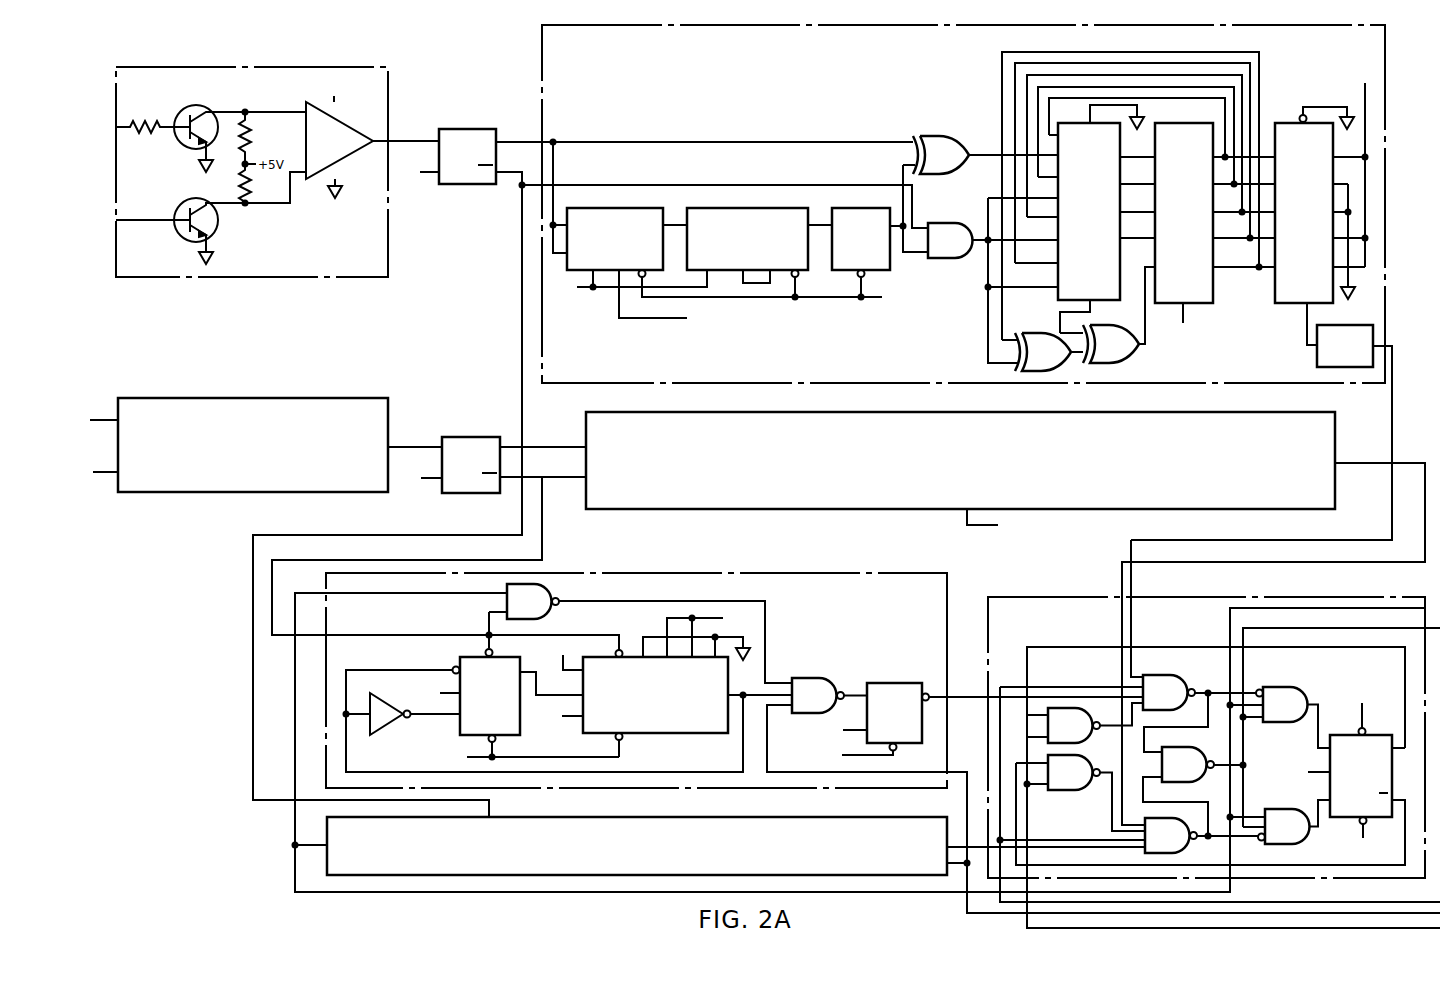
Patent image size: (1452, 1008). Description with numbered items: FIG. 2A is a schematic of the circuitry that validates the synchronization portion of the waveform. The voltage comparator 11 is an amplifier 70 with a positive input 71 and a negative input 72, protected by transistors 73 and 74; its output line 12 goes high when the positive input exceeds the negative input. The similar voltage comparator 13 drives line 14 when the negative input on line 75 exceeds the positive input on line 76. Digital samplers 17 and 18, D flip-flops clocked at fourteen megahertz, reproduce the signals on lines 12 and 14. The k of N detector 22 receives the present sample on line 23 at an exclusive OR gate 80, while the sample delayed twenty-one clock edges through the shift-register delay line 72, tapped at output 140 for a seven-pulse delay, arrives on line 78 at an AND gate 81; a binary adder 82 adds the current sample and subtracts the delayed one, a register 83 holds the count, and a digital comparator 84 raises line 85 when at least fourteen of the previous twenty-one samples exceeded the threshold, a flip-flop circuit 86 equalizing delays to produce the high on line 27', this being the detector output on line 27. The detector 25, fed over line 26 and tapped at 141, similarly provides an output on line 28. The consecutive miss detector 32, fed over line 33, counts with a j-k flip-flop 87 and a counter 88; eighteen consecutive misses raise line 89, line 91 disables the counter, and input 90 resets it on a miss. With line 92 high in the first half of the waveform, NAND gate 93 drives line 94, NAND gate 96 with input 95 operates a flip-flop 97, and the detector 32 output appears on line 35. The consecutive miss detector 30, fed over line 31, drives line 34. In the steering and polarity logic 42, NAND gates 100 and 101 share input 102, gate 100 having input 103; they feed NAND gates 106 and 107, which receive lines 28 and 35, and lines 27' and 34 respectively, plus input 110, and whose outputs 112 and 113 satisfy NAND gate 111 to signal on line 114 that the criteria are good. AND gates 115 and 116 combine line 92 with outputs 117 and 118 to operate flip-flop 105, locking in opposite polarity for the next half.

The voltage comparator 11 is at (279, 67).
The output line 12 is at (418, 133).
The voltage comparator 13 is at (270, 398).
The output line 14 is at (429, 445).
The digital sampler 17 is at (456, 129).
The digital sampler 18 is at (465, 437).
The k of N detector 22 is at (586, 383).
The line 23 is at (531, 137).
The k of N detector 25 is at (647, 412).
The line 26 is at (548, 447).
The line 27 is at (1151, 608).
The line 27' is at (1261, 443).
The line 28 is at (1425, 545).
The consecutive miss detector 30 is at (730, 817).
The line 31 is at (521, 222).
The consecutive miss detector 32 is at (822, 573).
The line 33 is at (542, 538).
The line 34 is at (980, 844).
The line 35 is at (962, 695).
The steering and polarity logic 42 is at (1032, 596).
The amplifier 70 is at (350, 122).
The positive input 71 is at (145, 118).
The negative input 72 is at (118, 218).
The transistor 73 is at (190, 110).
The transistor 74 is at (186, 206).
The line 75 is at (103, 423).
The line 76 is at (97, 470).
The line 78 is at (907, 254).
The exclusive OR gate 80 is at (948, 172).
The AND gate 81 is at (943, 224).
The binary adder 82 is at (1085, 118).
The register 83 is at (1189, 123).
The digital comparator 84 is at (1298, 118).
The line 85 is at (1306, 322).
The flip-flop circuit 86 is at (1317, 360).
The j-k flip-flop 87 is at (456, 657).
The counter 88 is at (667, 738).
The line 89 is at (756, 692).
The input 90 is at (598, 637).
The line 91 is at (727, 766).
The line 92 is at (295, 690).
The NAND gate 93 is at (548, 616).
The line 94 is at (768, 615).
The input 95 is at (767, 748).
The NAND gate 96 is at (815, 682).
The flip-flop 97 is at (893, 683).
The NAND gate 100 is at (1089, 719).
The NAND gate 101 is at (1079, 760).
The line 102 is at (1322, 928).
The input 103 is at (1027, 658).
The flip-flop circuit 105 is at (1368, 732).
The NAND gate 106 is at (1170, 676).
The NAND gate 107 is at (1196, 845).
The input 110 is at (1404, 902).
The NAND gate 111 is at (1193, 744).
The input 112 is at (1172, 731).
The input 113 is at (1143, 790).
The line 114 is at (1307, 627).
The AND gate 115 is at (1293, 688).
The AND gate 116 is at (1295, 809).
The output 117 is at (1223, 689).
The output 118 is at (1214, 830).
The output 140 is at (618, 320).
The tap 141 is at (962, 522).